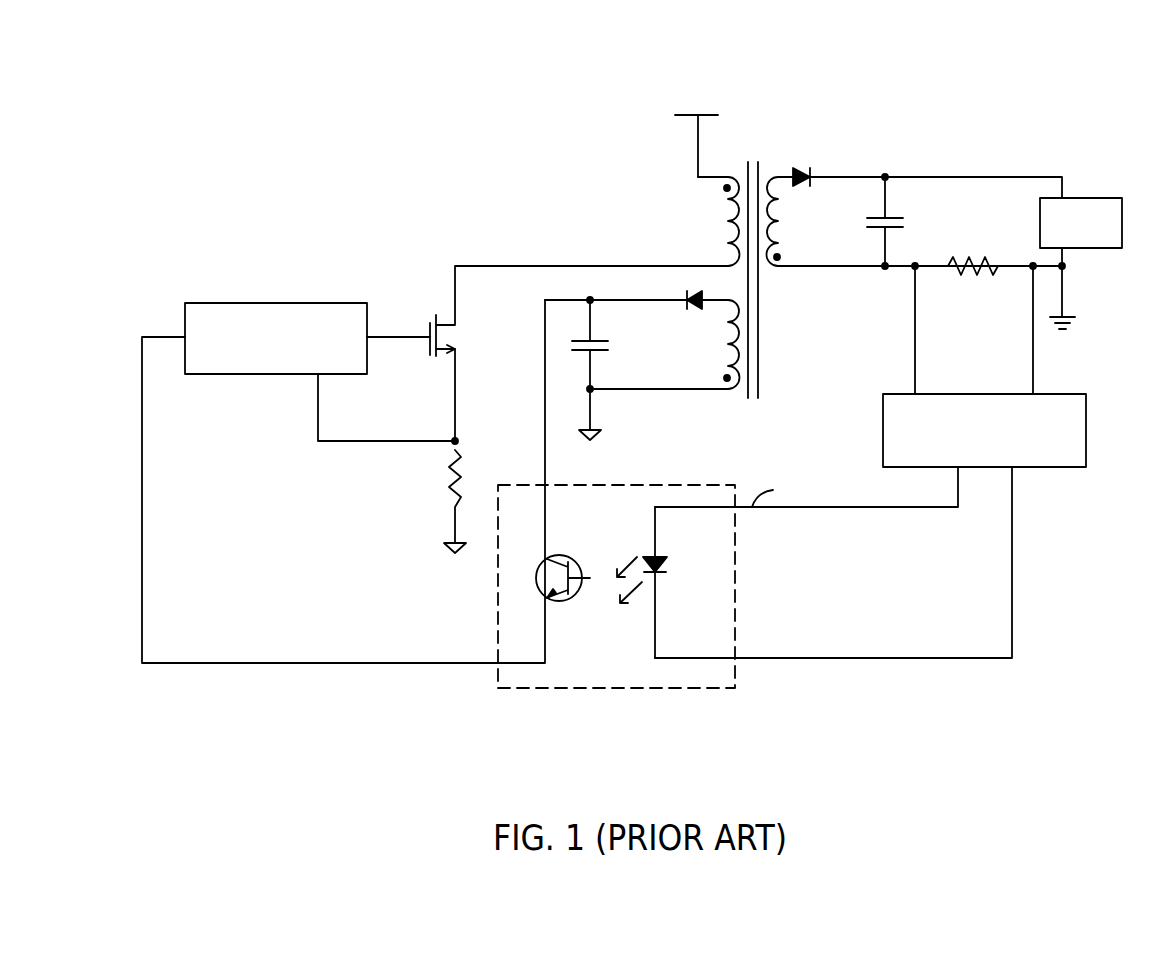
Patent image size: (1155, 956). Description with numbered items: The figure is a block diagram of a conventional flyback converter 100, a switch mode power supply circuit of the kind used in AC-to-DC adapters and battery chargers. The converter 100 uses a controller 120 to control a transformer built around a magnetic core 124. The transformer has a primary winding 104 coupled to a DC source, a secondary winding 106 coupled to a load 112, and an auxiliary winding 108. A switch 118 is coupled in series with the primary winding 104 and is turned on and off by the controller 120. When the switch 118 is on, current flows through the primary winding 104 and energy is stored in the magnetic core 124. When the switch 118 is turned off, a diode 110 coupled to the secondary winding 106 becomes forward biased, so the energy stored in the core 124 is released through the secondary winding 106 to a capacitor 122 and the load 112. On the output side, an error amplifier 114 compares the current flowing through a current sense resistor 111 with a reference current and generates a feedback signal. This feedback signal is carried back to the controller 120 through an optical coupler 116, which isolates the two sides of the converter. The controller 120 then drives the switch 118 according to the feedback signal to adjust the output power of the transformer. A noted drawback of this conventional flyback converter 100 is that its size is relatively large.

The flyback converter 100 is at (298, 127).
The primary winding 104 is at (729, 237).
The secondary winding 106 is at (775, 244).
The auxiliary winding 108 is at (729, 358).
The diode 110 is at (810, 175).
The current sense resistor 111 is at (978, 264).
The load 112 is at (1097, 198).
The error amplifier 114 is at (1073, 394).
The optical coupler 116 is at (651, 485).
The switch 118 is at (428, 346).
The controller 120 is at (270, 375).
The capacitor 122 is at (891, 216).
The magnetic core 124 is at (760, 358).